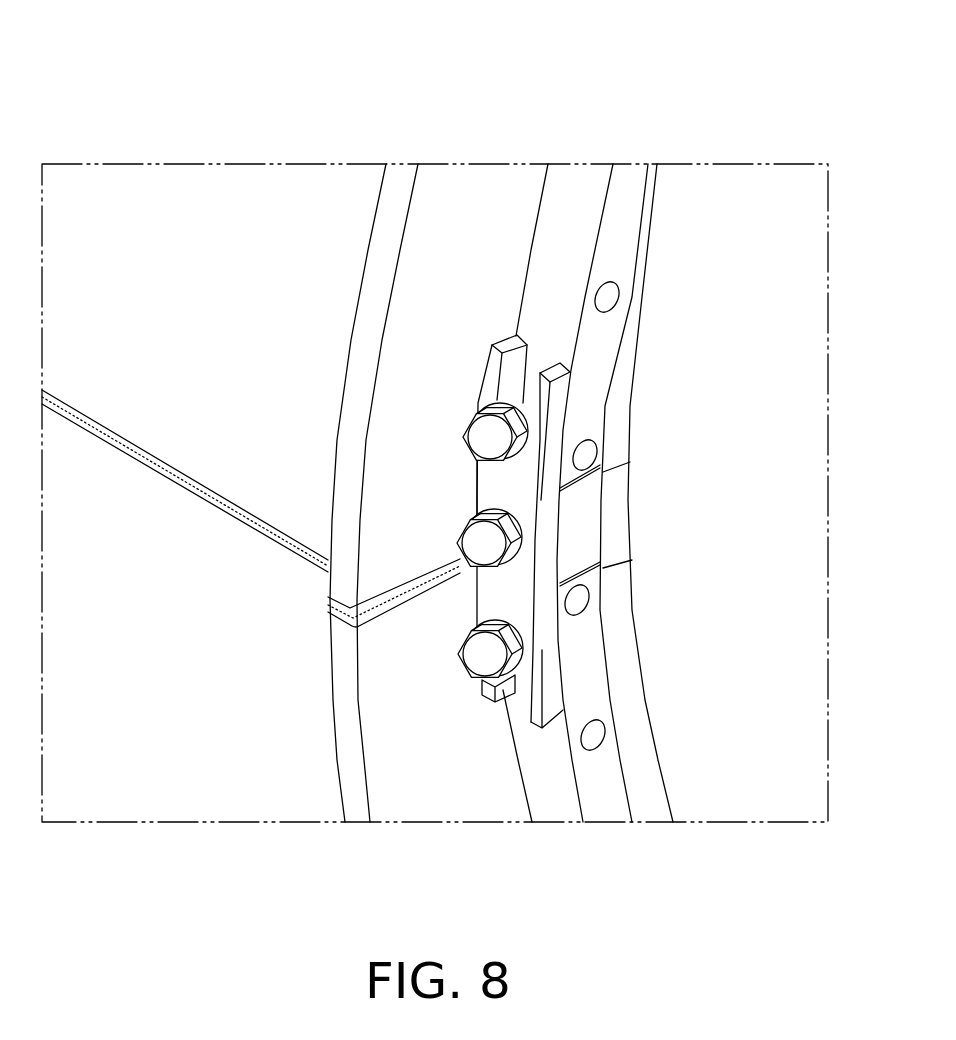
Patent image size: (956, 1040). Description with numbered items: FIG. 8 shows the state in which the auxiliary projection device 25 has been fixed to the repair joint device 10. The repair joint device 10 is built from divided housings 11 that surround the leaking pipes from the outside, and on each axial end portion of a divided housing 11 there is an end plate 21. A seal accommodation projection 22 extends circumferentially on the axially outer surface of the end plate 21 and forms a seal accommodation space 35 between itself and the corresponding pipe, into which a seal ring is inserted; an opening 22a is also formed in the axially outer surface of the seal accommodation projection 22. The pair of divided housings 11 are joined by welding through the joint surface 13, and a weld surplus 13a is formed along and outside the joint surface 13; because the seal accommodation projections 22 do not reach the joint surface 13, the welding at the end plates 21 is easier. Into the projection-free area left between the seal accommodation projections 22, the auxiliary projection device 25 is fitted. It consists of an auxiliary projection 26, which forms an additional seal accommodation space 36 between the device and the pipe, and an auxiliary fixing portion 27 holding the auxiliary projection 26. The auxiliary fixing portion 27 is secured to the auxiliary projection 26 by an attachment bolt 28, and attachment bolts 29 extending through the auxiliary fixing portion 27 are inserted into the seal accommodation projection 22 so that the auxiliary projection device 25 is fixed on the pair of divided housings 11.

The repair joint device 10 is at (307, 158).
The divided housing 11 is at (190, 216).
The joint surface 13 is at (251, 508).
The weld surplus 13a is at (228, 482).
The end plate 21 is at (470, 216).
The seal accommodation projection 22 is at (621, 495).
The opening 22a is at (620, 307).
The auxiliary projection device 25 is at (473, 592).
The auxiliary projection 26 is at (583, 520).
The auxiliary fixing portion 27 is at (480, 561).
The attachment bolt 28 is at (470, 550).
The attachment bolt 29 is at (478, 449).
The seal accommodation space 35 is at (620, 406).
The additional seal accommodation space 36 is at (615, 555).